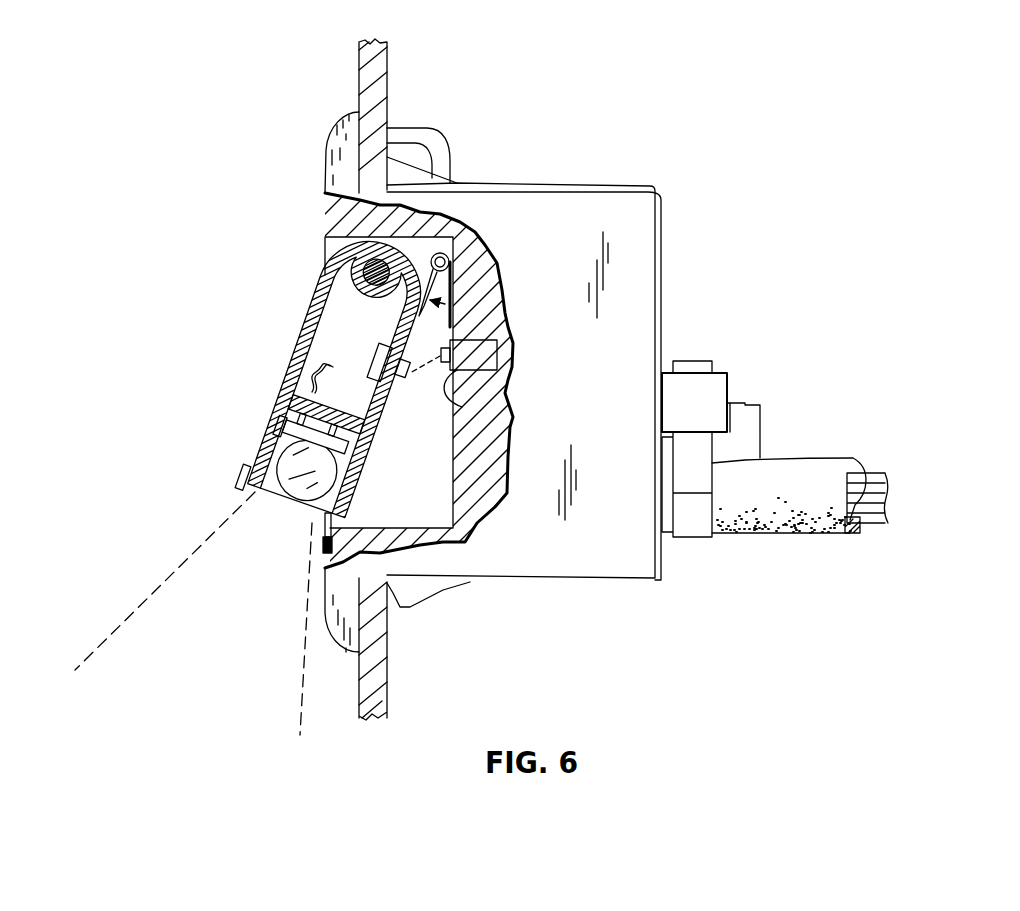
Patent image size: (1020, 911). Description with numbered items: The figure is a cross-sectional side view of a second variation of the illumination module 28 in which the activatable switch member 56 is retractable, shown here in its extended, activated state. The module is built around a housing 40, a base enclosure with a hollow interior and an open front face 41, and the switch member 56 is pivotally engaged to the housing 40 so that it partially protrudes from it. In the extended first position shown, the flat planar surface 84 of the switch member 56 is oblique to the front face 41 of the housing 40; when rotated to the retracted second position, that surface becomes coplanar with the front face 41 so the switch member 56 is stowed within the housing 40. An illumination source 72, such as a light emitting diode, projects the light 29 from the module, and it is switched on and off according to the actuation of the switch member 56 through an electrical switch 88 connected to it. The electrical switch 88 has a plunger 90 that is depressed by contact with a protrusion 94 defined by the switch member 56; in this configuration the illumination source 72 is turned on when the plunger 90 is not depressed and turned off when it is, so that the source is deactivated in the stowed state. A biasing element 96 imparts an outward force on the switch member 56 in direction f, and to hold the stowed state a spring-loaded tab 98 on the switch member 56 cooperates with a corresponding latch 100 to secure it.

The illumination module 28 is at (596, 68).
The light 29 is at (193, 606).
The housing 40 is at (540, 583).
The front face 41 is at (325, 220).
The switch member 56 is at (288, 393).
The illumination source 72 is at (285, 440).
The flat planar surface 84 is at (313, 292).
The electrical switch 88 is at (482, 355).
The plunger 90 is at (506, 410).
The protrusion 94 is at (403, 380).
The biasing element 96 is at (450, 268).
The spring-loaded tab 98 is at (241, 467).
The latch 100 is at (313, 523).